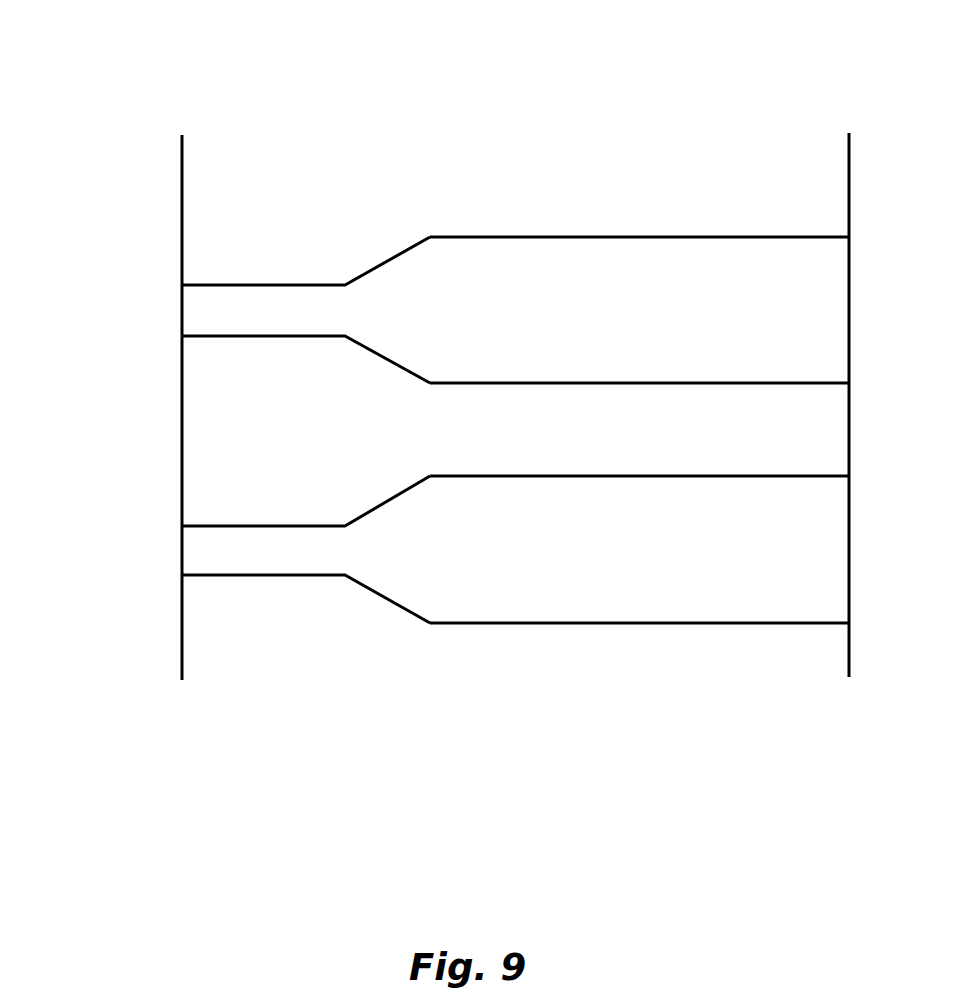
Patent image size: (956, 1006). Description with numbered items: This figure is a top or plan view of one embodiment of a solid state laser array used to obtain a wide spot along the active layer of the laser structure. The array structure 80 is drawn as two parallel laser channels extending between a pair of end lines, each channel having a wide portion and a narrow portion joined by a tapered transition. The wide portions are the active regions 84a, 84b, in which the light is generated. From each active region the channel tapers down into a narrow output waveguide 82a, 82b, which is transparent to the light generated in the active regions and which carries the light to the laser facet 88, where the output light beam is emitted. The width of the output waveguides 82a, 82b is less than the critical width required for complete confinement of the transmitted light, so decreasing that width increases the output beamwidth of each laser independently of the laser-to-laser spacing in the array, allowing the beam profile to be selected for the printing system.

The array structure 80 is at (158, 52).
The narrow output waveguide 82a is at (226, 303).
The narrow output waveguide 82b is at (219, 545).
The active region 84a is at (583, 255).
The active region 84b is at (577, 503).
The laser facet 88 is at (181, 628).